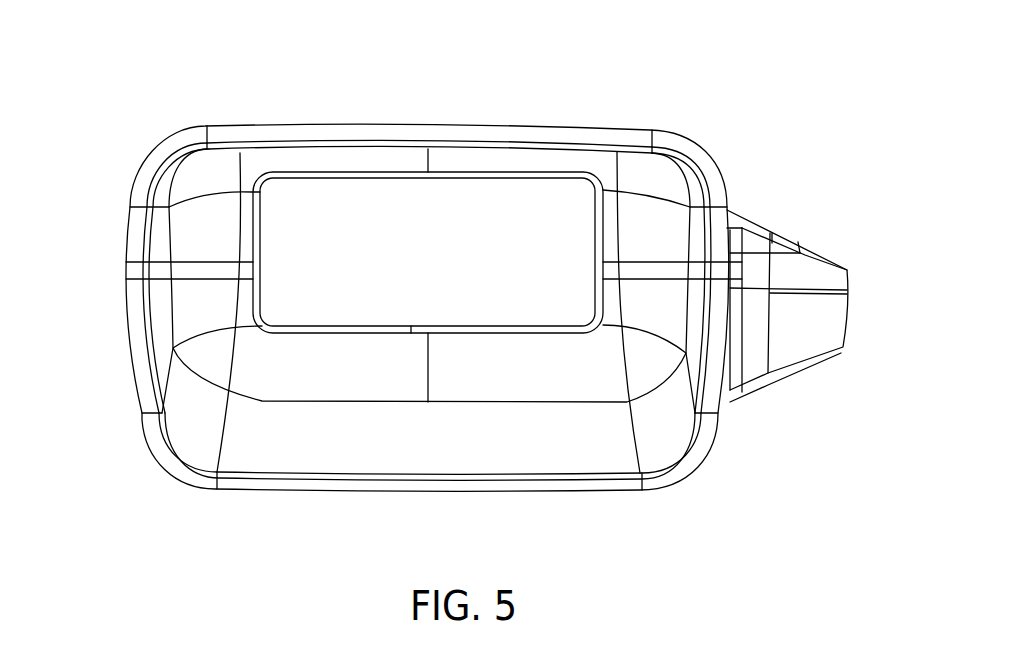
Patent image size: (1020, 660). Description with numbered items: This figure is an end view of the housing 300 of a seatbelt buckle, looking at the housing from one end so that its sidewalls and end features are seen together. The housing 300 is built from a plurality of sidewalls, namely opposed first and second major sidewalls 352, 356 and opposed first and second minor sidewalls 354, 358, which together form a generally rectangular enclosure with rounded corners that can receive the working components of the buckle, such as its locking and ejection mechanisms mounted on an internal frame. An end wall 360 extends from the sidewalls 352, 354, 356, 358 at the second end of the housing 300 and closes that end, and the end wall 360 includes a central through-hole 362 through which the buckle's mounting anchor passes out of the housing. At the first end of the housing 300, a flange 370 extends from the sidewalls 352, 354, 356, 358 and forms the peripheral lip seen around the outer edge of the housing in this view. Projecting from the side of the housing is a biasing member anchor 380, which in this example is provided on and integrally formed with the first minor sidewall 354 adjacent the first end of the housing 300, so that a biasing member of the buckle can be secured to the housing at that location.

The housing 300 is at (106, 56).
The first major sidewall 352 is at (517, 493).
The first minor sidewall 354 is at (718, 173).
The second major sidewall 356 is at (438, 122).
The second minor sidewall 358 is at (128, 330).
The end wall 360 is at (346, 158).
The through-hole 362 is at (445, 254).
The flange 370 is at (274, 482).
The biasing member anchor 380 is at (832, 315).